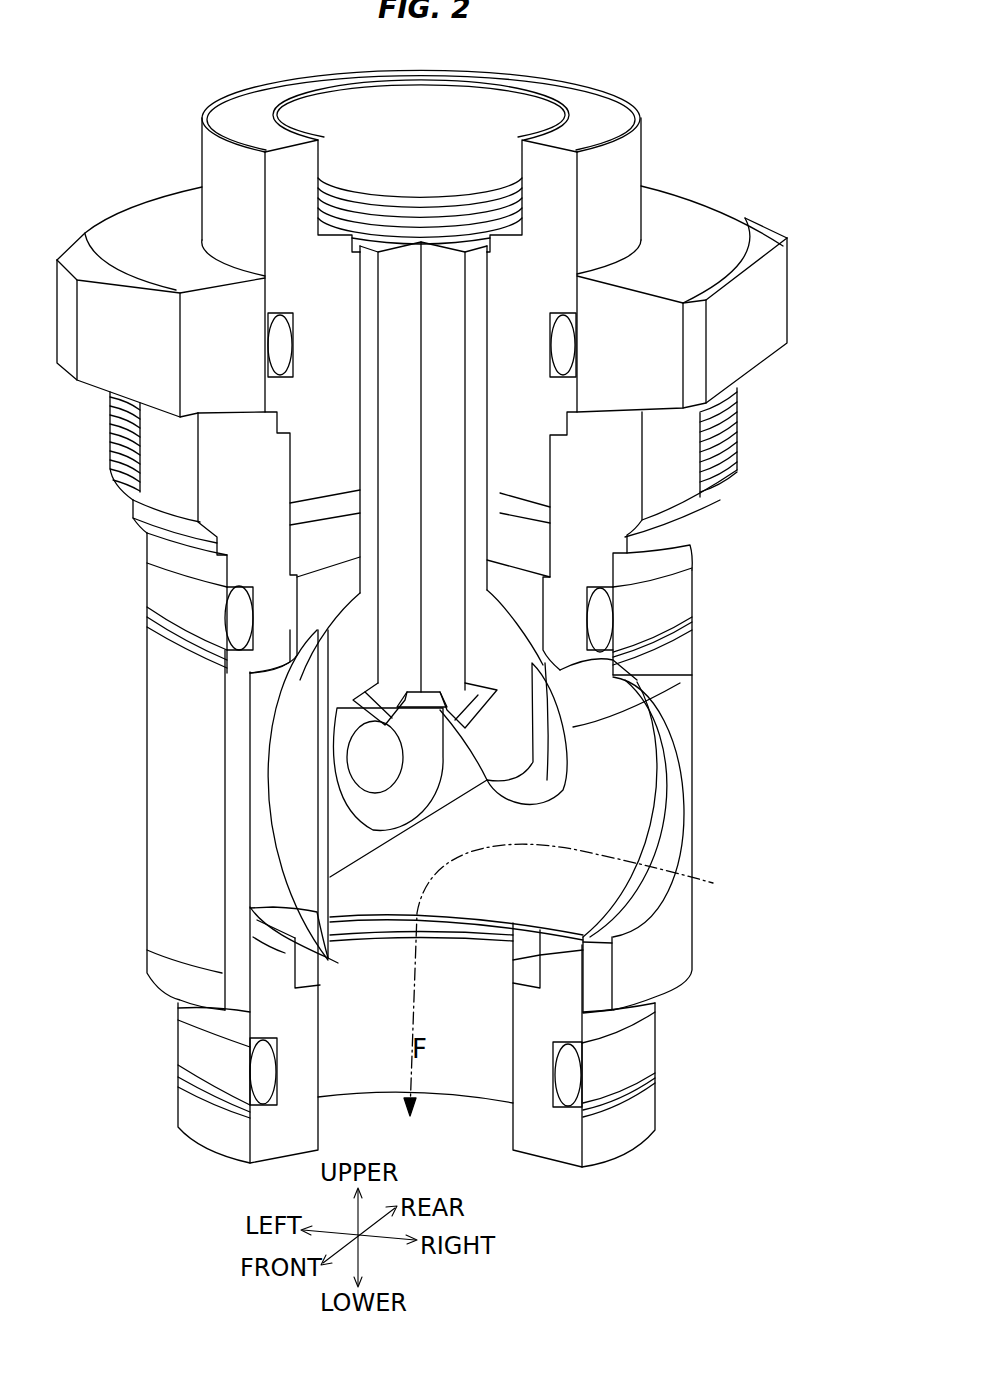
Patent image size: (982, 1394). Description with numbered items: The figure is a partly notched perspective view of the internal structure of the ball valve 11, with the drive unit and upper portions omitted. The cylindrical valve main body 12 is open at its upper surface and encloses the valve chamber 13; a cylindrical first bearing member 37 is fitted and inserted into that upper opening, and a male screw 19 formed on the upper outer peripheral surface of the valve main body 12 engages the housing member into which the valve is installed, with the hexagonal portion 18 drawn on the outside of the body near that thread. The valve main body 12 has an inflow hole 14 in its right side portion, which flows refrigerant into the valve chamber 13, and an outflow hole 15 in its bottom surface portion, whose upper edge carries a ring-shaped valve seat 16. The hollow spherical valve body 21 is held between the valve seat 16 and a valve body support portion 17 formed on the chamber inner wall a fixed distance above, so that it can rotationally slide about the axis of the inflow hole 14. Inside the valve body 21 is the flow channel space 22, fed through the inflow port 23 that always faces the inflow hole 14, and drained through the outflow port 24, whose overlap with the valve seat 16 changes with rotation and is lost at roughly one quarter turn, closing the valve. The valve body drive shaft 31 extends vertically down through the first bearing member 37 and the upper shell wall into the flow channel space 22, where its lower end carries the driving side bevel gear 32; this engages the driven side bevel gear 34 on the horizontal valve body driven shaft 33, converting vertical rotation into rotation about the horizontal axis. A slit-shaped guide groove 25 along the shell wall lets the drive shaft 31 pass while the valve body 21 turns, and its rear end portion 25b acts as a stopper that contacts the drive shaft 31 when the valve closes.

The ball valve 11 is at (673, 141).
The valve main body 12 is at (673, 492).
The valve chamber 13 is at (263, 790).
The inflow hole 14 is at (645, 910).
The outflow hole 15 is at (505, 1126).
The valve seat 16 is at (318, 928).
The valve body support portion 17 is at (250, 683).
The hex nut 18 is at (747, 332).
The male screw 19 is at (713, 457).
The valve body 21 is at (263, 700).
The flow channel space 22 is at (330, 892).
The inflow port 23 is at (630, 850).
The outflow port 24 is at (327, 978).
The guide groove 25 is at (573, 727).
The rear end portion 25b is at (533, 787).
The valve body drive shaft 31 is at (397, 458).
The driving side bevel gear 32 is at (343, 728).
The valve body driven shaft 33 is at (427, 752).
The driven side bevel gear 34 is at (347, 817).
The first bearing member 37 is at (223, 172).